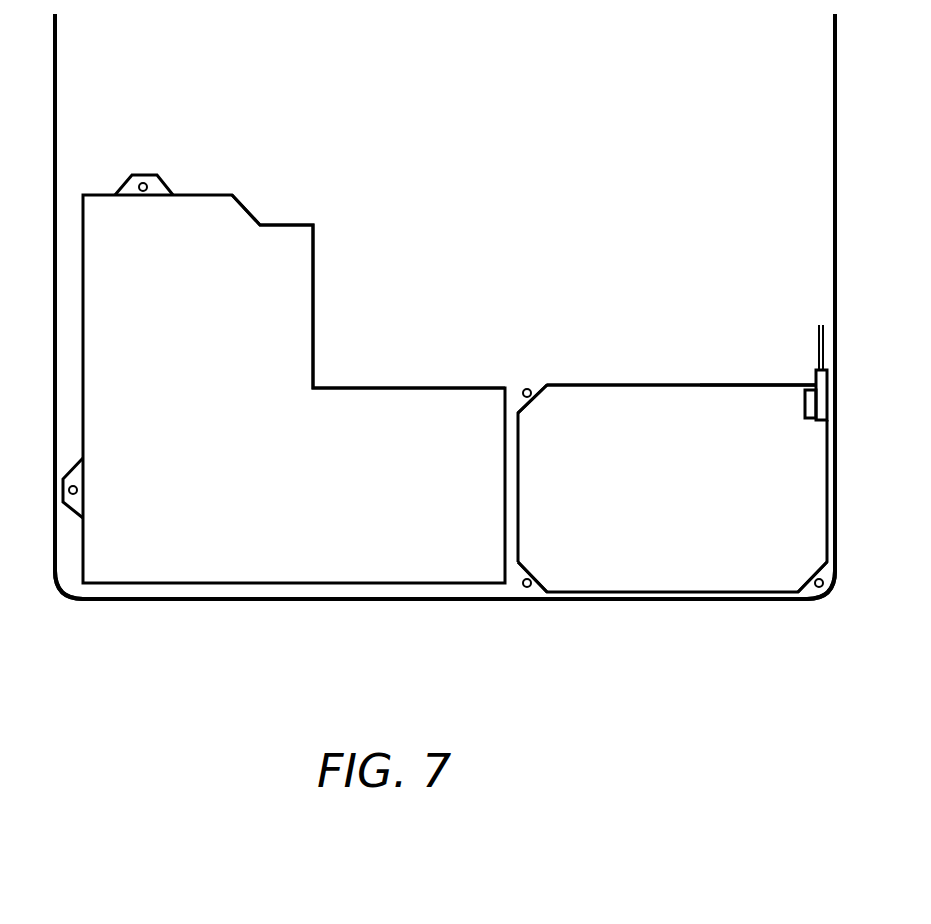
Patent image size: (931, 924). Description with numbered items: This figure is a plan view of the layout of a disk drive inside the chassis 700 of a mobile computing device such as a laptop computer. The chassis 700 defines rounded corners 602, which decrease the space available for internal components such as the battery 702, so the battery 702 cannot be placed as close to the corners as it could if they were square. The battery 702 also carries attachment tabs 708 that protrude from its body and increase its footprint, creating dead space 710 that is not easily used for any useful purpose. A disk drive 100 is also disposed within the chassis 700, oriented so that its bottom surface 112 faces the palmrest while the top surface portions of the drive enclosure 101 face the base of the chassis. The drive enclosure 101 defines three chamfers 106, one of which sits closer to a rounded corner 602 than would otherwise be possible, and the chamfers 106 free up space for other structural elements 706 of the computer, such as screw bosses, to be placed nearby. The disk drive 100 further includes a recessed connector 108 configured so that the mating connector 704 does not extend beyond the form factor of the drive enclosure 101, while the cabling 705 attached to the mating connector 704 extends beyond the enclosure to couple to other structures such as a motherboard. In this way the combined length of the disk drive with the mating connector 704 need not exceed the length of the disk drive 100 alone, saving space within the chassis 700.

The chassis 700 is at (57, 133).
The rounded corners 602 is at (68, 596).
The dead space 710 is at (67, 343).
The battery 702 is at (313, 318).
The attachment tabs 708 is at (150, 175).
The disk drive 100 is at (608, 354).
The drive enclosure 101 is at (648, 383).
The bottom surface 112 is at (745, 400).
The chamfers 106 is at (537, 388).
The structural elements 706 is at (524, 388).
The mating connector 704 is at (816, 372).
The recessed connector 108 is at (805, 408).
The cabling 705 is at (819, 325).